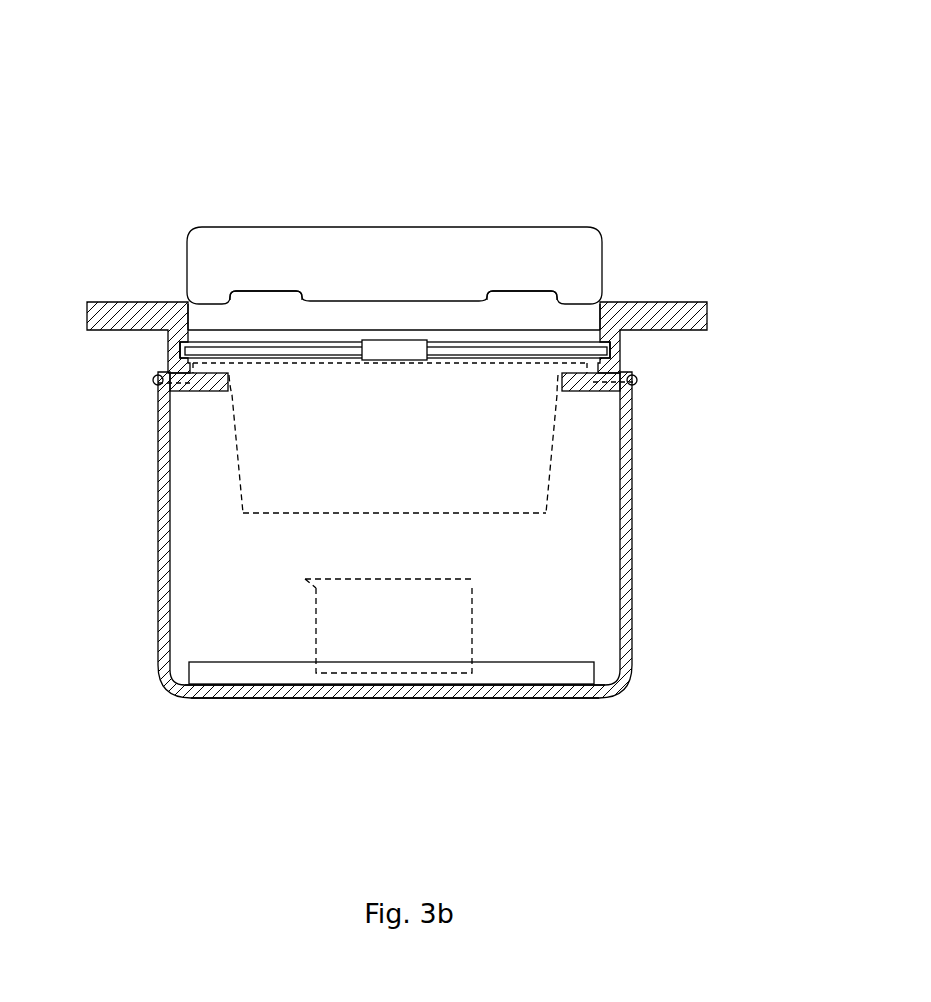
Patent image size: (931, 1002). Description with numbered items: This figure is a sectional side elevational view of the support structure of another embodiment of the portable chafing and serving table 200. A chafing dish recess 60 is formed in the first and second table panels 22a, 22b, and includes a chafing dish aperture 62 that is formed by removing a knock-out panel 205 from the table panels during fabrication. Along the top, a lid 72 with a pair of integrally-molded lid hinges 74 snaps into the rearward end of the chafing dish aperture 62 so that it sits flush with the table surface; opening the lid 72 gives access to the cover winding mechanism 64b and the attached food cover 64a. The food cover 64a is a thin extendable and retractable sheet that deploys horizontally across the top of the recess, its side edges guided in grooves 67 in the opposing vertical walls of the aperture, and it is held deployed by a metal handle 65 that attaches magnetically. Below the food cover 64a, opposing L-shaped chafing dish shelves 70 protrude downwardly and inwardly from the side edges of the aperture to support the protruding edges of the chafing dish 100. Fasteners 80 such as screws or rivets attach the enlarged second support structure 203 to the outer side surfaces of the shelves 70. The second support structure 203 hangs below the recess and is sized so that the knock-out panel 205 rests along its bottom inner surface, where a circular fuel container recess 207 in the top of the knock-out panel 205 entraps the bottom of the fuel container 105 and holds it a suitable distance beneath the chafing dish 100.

The portable chafing and serving table 200 is at (522, 98).
The first table panel 22a is at (107, 300).
The second table panel 22b is at (672, 302).
The lid 72 is at (242, 226).
The lid hinges 74 is at (243, 290).
The chafing dish recess 60 is at (558, 325).
The cover winding mechanism 64b is at (362, 342).
The food cover 64a is at (318, 352).
The metal handle 65 is at (417, 352).
The grooves 67 is at (172, 353).
The chafing dish shelves 70 is at (200, 383).
The fasteners 80 is at (156, 383).
The second support structure 203 is at (633, 625).
The fuel container recess 207 is at (367, 678).
The knock-out panel 205 is at (232, 670).
The chafing dish aperture 62 is at (233, 392).
The chafing dish 100 is at (297, 514).
The fuel container 105 is at (413, 579).